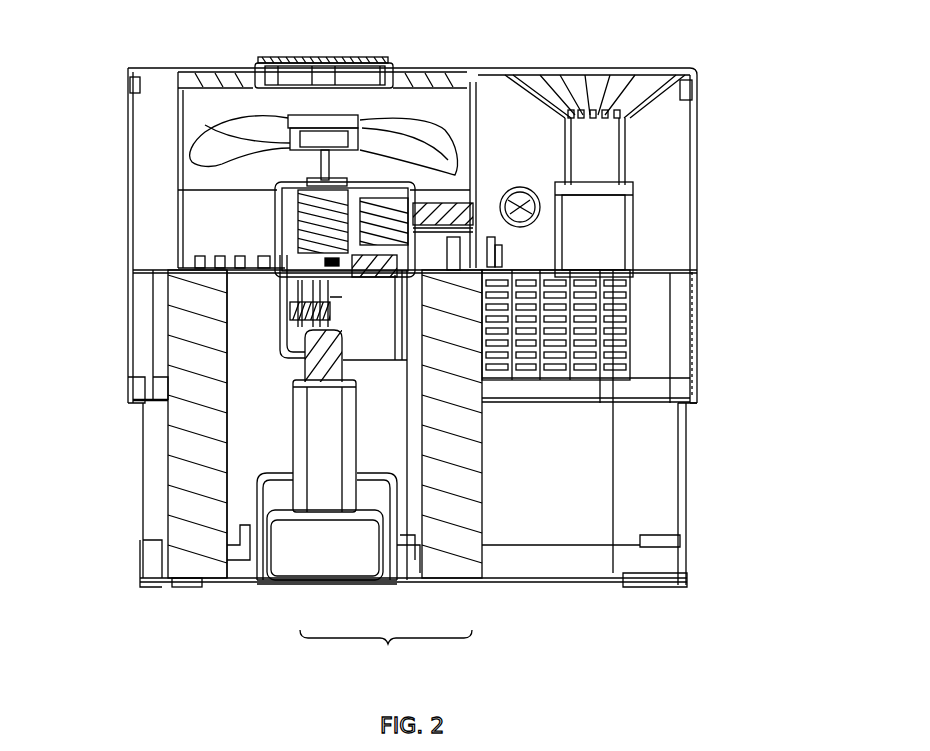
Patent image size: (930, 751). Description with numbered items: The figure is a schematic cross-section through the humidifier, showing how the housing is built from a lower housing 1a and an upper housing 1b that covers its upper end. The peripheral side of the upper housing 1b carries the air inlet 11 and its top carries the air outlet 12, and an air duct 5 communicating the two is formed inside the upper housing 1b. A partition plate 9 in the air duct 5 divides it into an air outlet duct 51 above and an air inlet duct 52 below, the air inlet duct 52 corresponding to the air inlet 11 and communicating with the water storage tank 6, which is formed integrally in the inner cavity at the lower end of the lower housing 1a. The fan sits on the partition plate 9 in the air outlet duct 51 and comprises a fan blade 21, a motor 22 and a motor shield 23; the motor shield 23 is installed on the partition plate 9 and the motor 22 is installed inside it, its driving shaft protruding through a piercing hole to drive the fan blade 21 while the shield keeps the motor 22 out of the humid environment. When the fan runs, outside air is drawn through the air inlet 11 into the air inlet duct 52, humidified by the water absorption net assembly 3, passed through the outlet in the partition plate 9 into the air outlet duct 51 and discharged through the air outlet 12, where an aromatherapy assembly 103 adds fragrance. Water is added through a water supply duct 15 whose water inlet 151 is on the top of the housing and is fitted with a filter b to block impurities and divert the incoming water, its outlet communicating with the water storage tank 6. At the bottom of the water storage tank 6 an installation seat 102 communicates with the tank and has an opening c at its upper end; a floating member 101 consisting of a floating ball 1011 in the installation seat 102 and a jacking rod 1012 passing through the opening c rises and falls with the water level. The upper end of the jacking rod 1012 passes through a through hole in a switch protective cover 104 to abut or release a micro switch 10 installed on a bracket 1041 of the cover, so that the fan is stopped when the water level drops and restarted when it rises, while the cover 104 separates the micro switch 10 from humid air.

The air outlet 12 is at (207, 67).
The aromatherapy assembly 103 is at (330, 58).
The air outlet duct 51 is at (208, 108).
The fan blade 21 is at (220, 165).
The upper housing 1b is at (480, 70).
The filter b is at (585, 110).
The water inlet 151 is at (620, 90).
The water supply duct 15 is at (600, 212).
The partition plate 9 is at (420, 268).
The opening c is at (342, 358).
The air inlet 11 is at (692, 317).
The lower housing 1a is at (685, 462).
The switch protective cover 104 is at (400, 357).
The motor shield 23 is at (275, 190).
The motor 22 is at (313, 215).
The bracket 1041 is at (285, 287).
The micro switch 10 is at (307, 323).
The air inlet duct 52 is at (242, 413).
The water absorption net assembly 3 is at (195, 475).
The installation seat 102 is at (258, 500).
The water storage tank 6 is at (283, 440).
The jacking rod 1012 is at (325, 427).
The floating ball 1011 is at (347, 543).
The floating member 101 is at (386, 650).
The air duct 5 is at (380, 360).